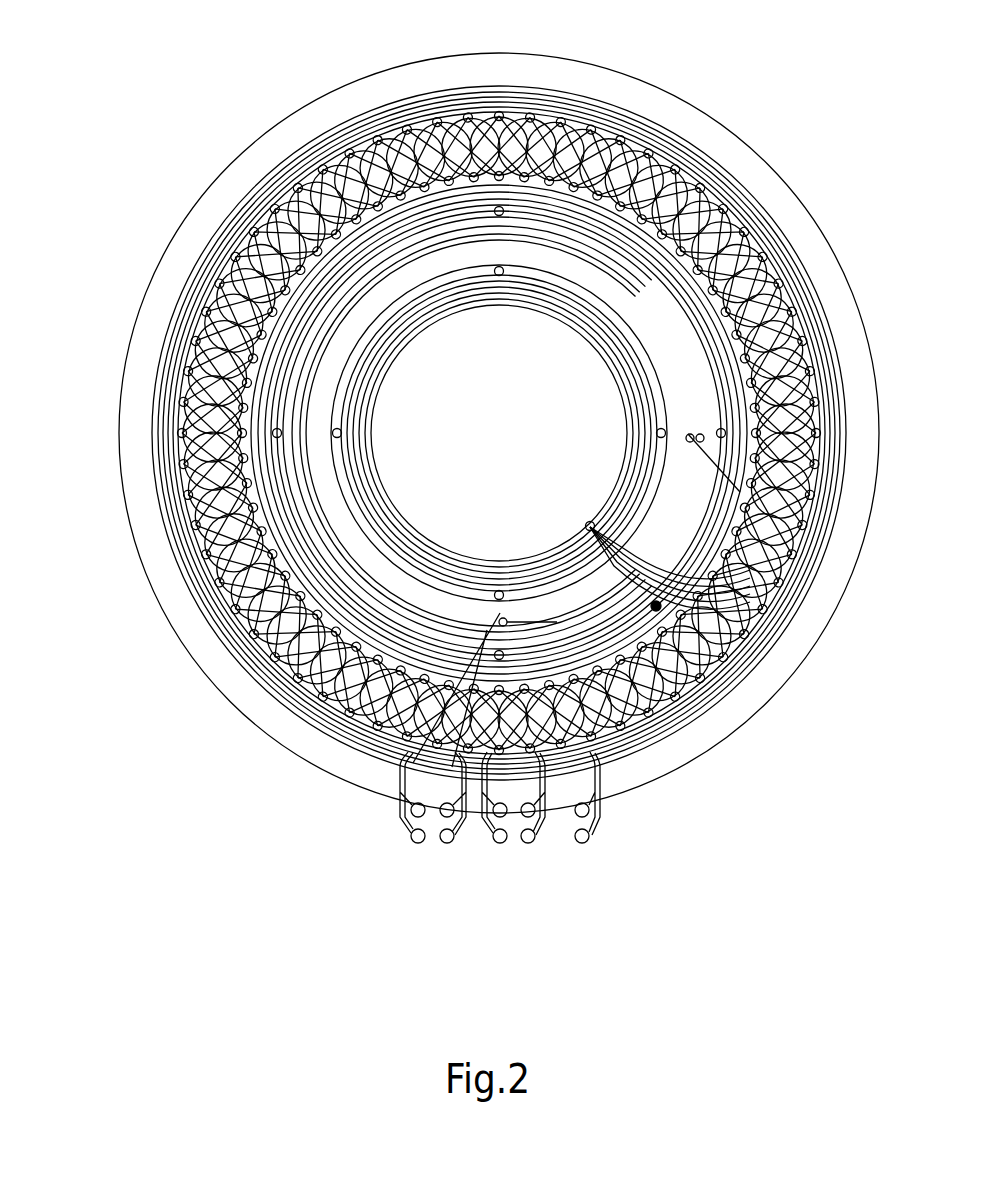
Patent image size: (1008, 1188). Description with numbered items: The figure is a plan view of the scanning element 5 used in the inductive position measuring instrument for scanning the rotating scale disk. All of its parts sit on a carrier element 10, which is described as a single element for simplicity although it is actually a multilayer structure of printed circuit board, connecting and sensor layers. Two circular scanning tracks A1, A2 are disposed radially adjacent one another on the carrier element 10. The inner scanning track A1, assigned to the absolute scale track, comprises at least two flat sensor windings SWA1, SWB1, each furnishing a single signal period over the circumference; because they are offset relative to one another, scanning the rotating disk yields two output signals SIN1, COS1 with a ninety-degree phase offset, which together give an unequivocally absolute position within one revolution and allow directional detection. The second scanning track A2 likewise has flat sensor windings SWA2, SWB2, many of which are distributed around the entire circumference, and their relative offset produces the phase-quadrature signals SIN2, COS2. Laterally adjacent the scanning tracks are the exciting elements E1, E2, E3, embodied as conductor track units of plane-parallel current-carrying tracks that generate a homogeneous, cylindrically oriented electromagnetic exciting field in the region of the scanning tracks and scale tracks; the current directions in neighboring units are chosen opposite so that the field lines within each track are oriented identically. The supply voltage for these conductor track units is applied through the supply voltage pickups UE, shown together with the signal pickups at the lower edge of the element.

The carrier element 10 is at (765, 158).
The scanning element 5 is at (192, 725).
The sensor winding SWA1 is at (468, 240).
The sensor winding SWB1 is at (545, 240).
The sensor winding SWA2 is at (182, 378).
The sensor winding SWB2 is at (180, 400).
The scanning track A1 is at (643, 300).
The scanning track A2 is at (807, 335).
The exciting element E1 is at (202, 603).
The exciting element E2 is at (313, 703).
The exciting element E3 is at (635, 495).
The output signal SIN1 is at (415, 843).
The output signal COS1 is at (443, 843).
The output signal SIN2 is at (502, 843).
The output signal COS2 is at (533, 843).
The supply voltage pickup UE is at (587, 843).